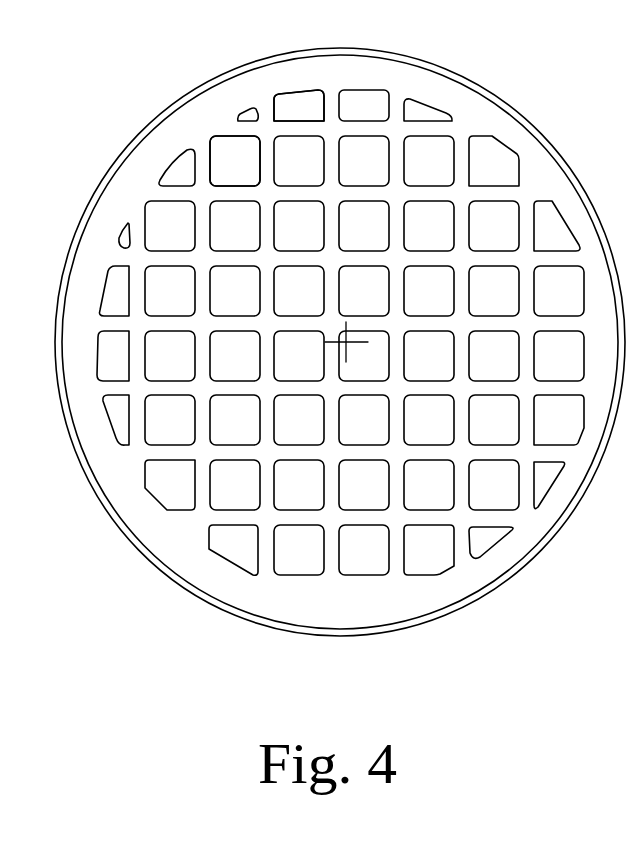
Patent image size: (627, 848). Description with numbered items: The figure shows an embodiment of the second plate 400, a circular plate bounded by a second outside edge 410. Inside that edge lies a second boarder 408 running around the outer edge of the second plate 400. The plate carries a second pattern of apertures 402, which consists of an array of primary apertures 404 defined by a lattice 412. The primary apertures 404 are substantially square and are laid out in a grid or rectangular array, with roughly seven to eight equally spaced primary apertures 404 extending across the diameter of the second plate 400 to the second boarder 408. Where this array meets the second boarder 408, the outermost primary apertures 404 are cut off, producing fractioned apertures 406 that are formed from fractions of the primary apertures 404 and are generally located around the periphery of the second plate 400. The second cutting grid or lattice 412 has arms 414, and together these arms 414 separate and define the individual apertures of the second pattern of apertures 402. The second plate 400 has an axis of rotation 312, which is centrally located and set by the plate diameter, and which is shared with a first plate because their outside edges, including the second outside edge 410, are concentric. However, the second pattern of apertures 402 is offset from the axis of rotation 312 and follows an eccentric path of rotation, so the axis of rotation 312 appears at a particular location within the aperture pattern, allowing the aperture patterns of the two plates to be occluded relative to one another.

The second plate 400 is at (237, 613).
The second outside edge 410 is at (363, 52).
The second pattern of apertures 402 is at (126, 225).
The primary apertures 404 is at (227, 150).
The fractioned apertures 406 is at (303, 108).
The second boarder 408 is at (447, 95).
The second cutting grid or lattice 412 is at (202, 385).
The arms 414 is at (265, 423).
The axis of rotation 312 is at (346, 341).